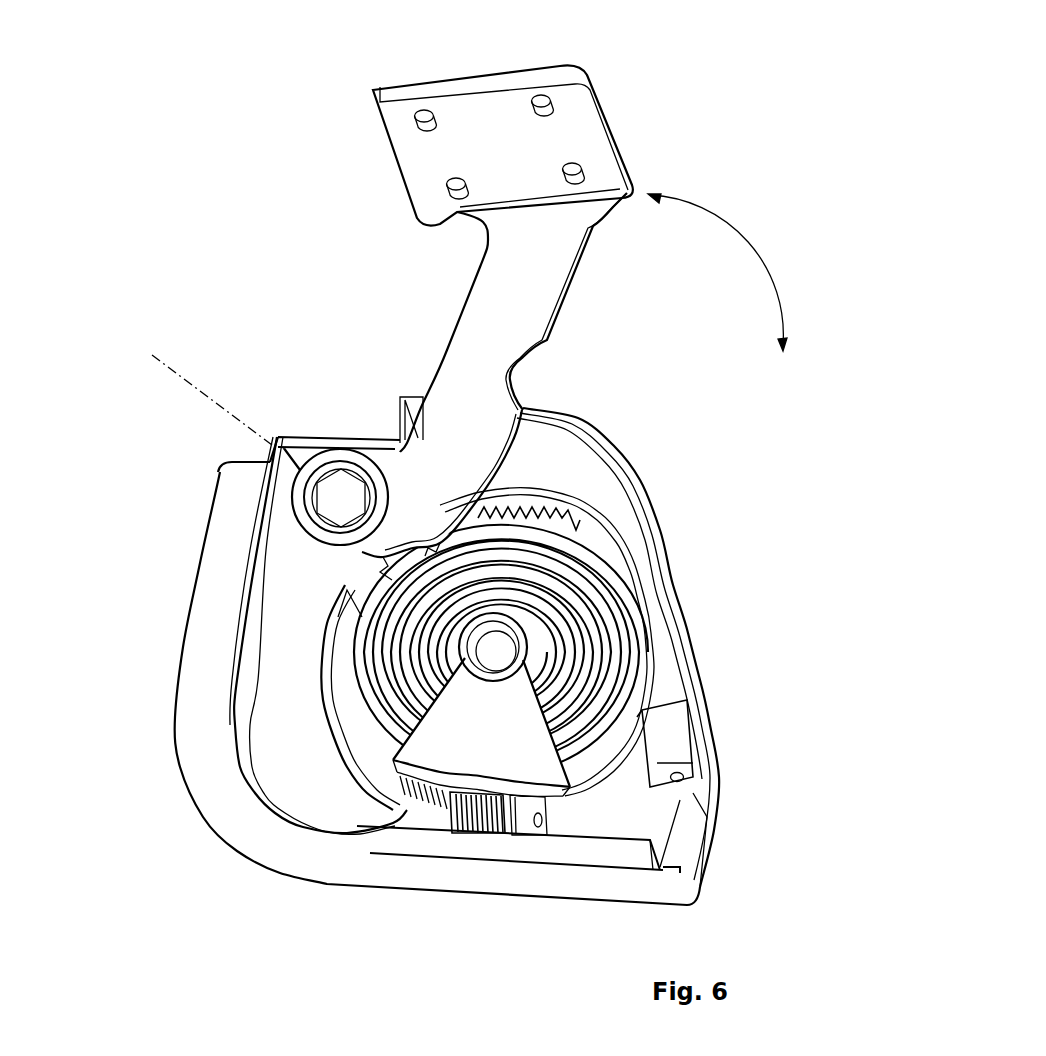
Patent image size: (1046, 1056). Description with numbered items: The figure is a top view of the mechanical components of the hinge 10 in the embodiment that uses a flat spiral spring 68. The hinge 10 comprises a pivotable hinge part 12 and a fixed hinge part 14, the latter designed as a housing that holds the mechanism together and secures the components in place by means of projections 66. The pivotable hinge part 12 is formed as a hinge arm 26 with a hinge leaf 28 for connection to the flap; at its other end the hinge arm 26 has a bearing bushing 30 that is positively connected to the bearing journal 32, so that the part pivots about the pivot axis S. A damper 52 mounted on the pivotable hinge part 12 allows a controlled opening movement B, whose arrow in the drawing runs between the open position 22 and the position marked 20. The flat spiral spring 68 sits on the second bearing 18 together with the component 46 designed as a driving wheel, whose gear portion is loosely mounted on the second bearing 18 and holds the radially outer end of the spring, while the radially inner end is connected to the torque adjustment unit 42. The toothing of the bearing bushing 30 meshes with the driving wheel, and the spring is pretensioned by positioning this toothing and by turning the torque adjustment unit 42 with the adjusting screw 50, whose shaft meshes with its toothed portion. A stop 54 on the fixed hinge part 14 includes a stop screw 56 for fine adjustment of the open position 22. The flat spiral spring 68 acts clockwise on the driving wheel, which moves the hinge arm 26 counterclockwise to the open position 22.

The hinge 10 is at (228, 97).
The pivotable hinge part 12 is at (371, 322).
The fixed hinge part 14 is at (307, 587).
The second bearing 18 is at (527, 650).
The second position 20 is at (801, 350).
The open position 22 is at (665, 183).
The hinge arm 26 is at (492, 338).
The hinge leaf 28 is at (412, 161).
The bearing bushing 30 is at (312, 552).
The bearing journal 32 is at (507, 640).
The torque adjustment unit 42 is at (420, 772).
The component 46 is at (570, 508).
The adjusting screw 50 is at (490, 838).
The damper 52 is at (337, 510).
The stop 54 is at (668, 712).
The stop screw 56 is at (690, 767).
The projections 66 is at (330, 727).
The flat spiral spring 68 is at (350, 630).
The opening movement B is at (716, 270).
The pivot axis S is at (198, 390).